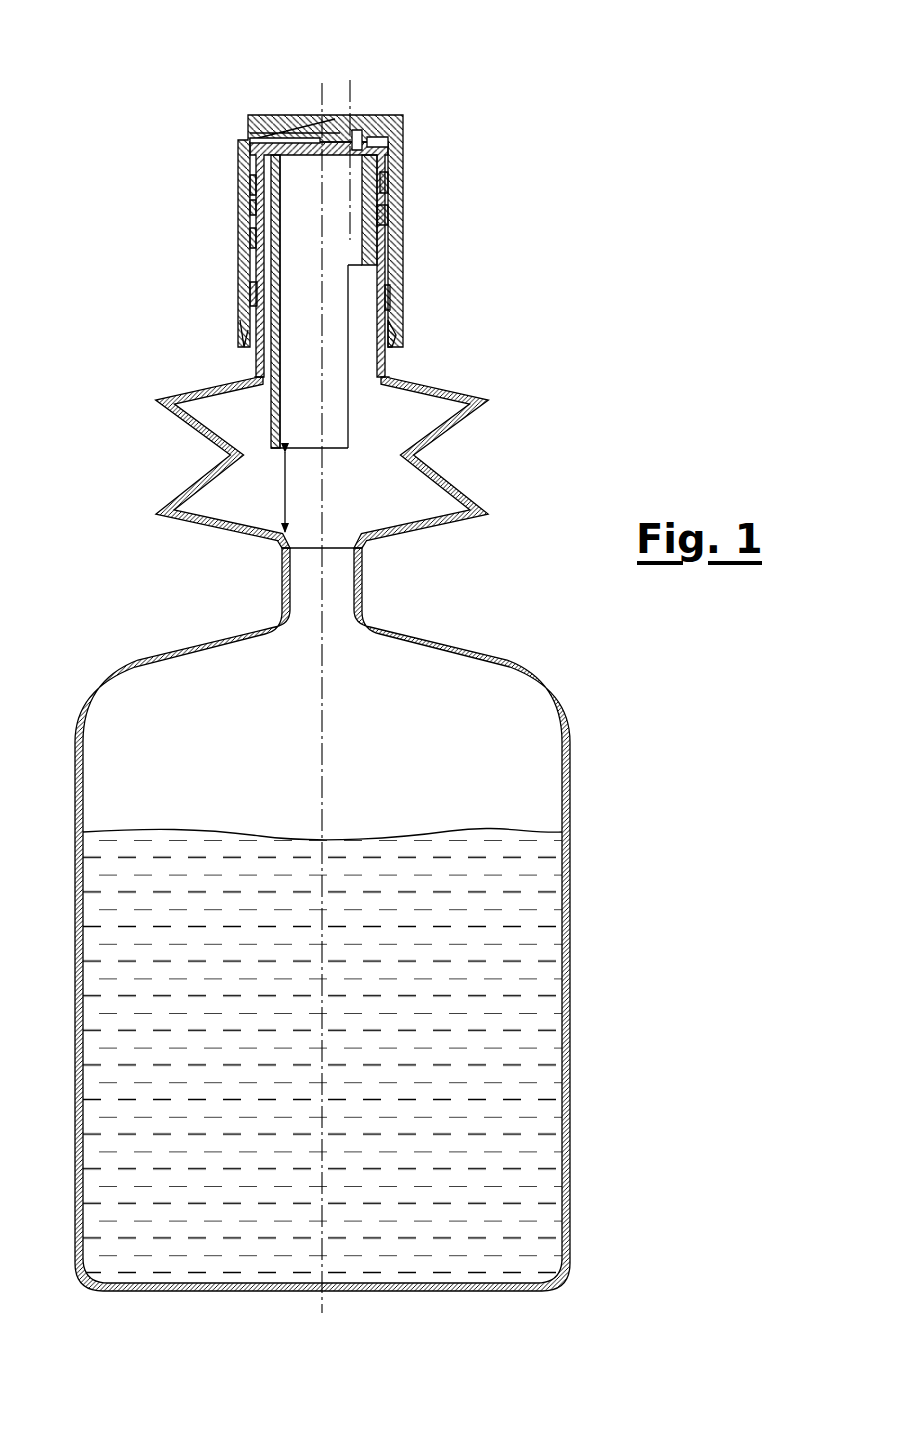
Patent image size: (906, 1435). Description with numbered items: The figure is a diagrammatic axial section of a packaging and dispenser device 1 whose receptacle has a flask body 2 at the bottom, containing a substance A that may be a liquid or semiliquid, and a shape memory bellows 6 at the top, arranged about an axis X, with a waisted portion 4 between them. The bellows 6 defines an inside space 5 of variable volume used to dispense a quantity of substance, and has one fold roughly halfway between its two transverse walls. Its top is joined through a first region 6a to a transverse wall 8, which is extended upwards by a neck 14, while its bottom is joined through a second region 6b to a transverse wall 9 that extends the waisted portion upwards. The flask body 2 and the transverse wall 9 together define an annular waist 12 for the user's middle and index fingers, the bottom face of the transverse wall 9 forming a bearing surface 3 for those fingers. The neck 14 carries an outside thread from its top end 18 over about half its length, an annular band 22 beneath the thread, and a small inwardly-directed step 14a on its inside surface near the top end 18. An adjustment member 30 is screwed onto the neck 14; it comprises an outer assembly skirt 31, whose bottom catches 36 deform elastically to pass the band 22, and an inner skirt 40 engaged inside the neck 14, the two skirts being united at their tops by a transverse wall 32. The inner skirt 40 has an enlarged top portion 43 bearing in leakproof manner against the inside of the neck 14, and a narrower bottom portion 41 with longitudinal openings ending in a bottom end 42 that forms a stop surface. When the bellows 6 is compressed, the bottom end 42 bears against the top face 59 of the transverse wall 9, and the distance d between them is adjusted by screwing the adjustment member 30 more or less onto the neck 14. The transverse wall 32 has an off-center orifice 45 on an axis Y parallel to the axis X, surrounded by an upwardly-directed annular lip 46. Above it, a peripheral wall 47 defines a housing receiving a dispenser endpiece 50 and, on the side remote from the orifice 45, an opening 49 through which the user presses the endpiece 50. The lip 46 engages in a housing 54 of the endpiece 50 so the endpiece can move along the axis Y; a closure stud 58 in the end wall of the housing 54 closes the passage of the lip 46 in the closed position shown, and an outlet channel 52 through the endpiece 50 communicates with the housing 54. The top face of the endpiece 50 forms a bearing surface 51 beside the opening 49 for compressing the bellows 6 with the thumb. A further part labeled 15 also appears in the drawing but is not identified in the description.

The packaging and dispenser device 1 is at (522, 180).
The flask body 2 is at (558, 690).
The bearing surface 3 is at (232, 534).
The waisted portion 4 is at (354, 572).
The inside space 5 is at (380, 505).
The shape memory bellows 6 is at (472, 490).
The first region 6a is at (482, 402).
The second region 6b is at (482, 512).
The transverse wall 8 is at (222, 392).
The transverse wall 9 is at (215, 530).
The annular waist 12 is at (412, 611).
The neck 14 is at (394, 292).
The inwardly-directed step 14a is at (400, 210).
The pump body 15 is at (400, 378).
The top end 18 is at (248, 196).
The annular band 22 is at (250, 300).
The adjustment member 30 is at (410, 172).
The outer assembly skirt 31 is at (248, 248).
The transverse wall 32 is at (255, 162).
The catches 36 is at (405, 331).
The inner skirt 40 is at (250, 183).
The bottom portion 41 is at (272, 412).
The bottom end 42 is at (270, 450).
The enlarged top portion 43 is at (395, 242).
The off-center orifice 45 is at (350, 158).
The annular lip 46 is at (318, 135).
The peripheral wall 47 is at (403, 125).
The opening 49 is at (248, 140).
The dispenser endpiece 50 is at (280, 108).
The bearing surface 51 is at (265, 128).
The outlet channel 52 is at (382, 110).
The housing 54 is at (357, 128).
The closure stud 58 is at (392, 152).
The top face 59 is at (253, 538).
The substance A is at (540, 912).
The axis X is at (322, 705).
The axis Y is at (350, 80).
The distance d is at (295, 492).